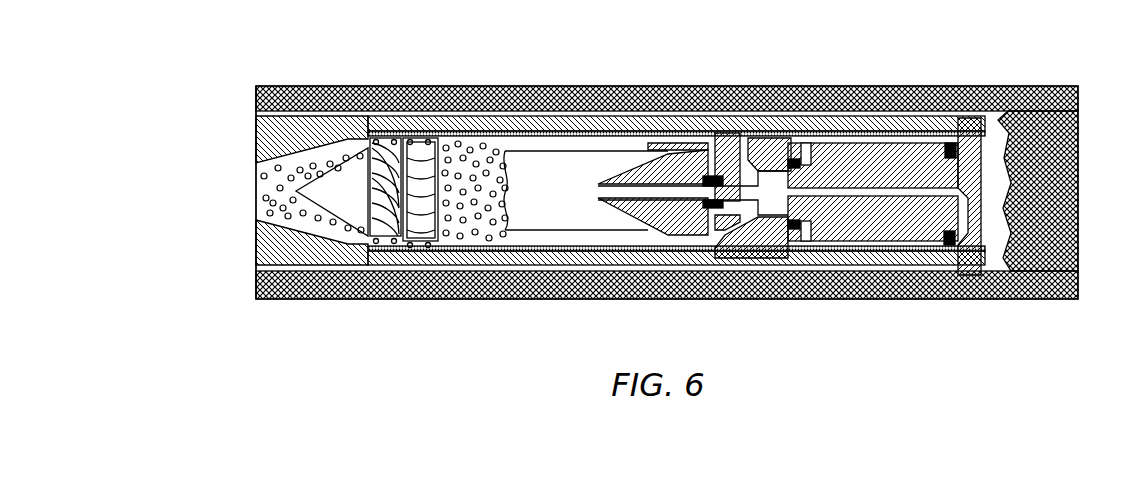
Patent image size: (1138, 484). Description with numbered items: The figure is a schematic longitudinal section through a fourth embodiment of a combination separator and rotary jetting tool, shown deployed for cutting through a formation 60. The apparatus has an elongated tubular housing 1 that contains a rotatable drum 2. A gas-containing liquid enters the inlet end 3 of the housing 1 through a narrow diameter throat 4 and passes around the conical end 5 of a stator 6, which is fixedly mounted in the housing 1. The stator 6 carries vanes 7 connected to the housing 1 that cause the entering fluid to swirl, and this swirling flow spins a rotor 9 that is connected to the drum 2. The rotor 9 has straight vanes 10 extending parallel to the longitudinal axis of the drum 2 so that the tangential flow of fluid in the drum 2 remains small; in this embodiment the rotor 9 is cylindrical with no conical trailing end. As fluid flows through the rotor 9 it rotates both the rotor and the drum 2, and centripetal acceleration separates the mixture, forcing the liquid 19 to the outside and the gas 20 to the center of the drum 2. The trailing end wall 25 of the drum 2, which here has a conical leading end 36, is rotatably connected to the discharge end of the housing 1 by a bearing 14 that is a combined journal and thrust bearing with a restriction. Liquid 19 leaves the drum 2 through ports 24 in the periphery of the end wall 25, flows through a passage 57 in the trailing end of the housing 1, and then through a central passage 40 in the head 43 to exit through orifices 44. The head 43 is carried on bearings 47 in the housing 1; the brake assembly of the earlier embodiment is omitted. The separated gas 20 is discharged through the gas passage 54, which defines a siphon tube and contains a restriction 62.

The housing 1 is at (517, 108).
The drum 2 is at (552, 130).
The inlet end 3 is at (248, 132).
The throat 4 is at (248, 200).
The conical end 5 is at (325, 195).
The stator 6 is at (367, 130).
The vanes 7 is at (378, 215).
The rotor 9 is at (413, 157).
The straight vanes 10 is at (416, 230).
The bearing 14 is at (640, 218).
The liquid 19 is at (473, 118).
The gas 20 is at (533, 194).
The ports 24 is at (703, 170).
The end wall 25 is at (612, 240).
The conical leading end 36 is at (635, 155).
The central passage 40 is at (895, 170).
The head 43 is at (850, 150).
The orifices 44 is at (975, 150).
The bearings 47 is at (787, 222).
The gas passage 54 is at (755, 130).
The passage 57 is at (745, 252).
The formation 60 is at (1018, 78).
The restriction 62 is at (942, 118).